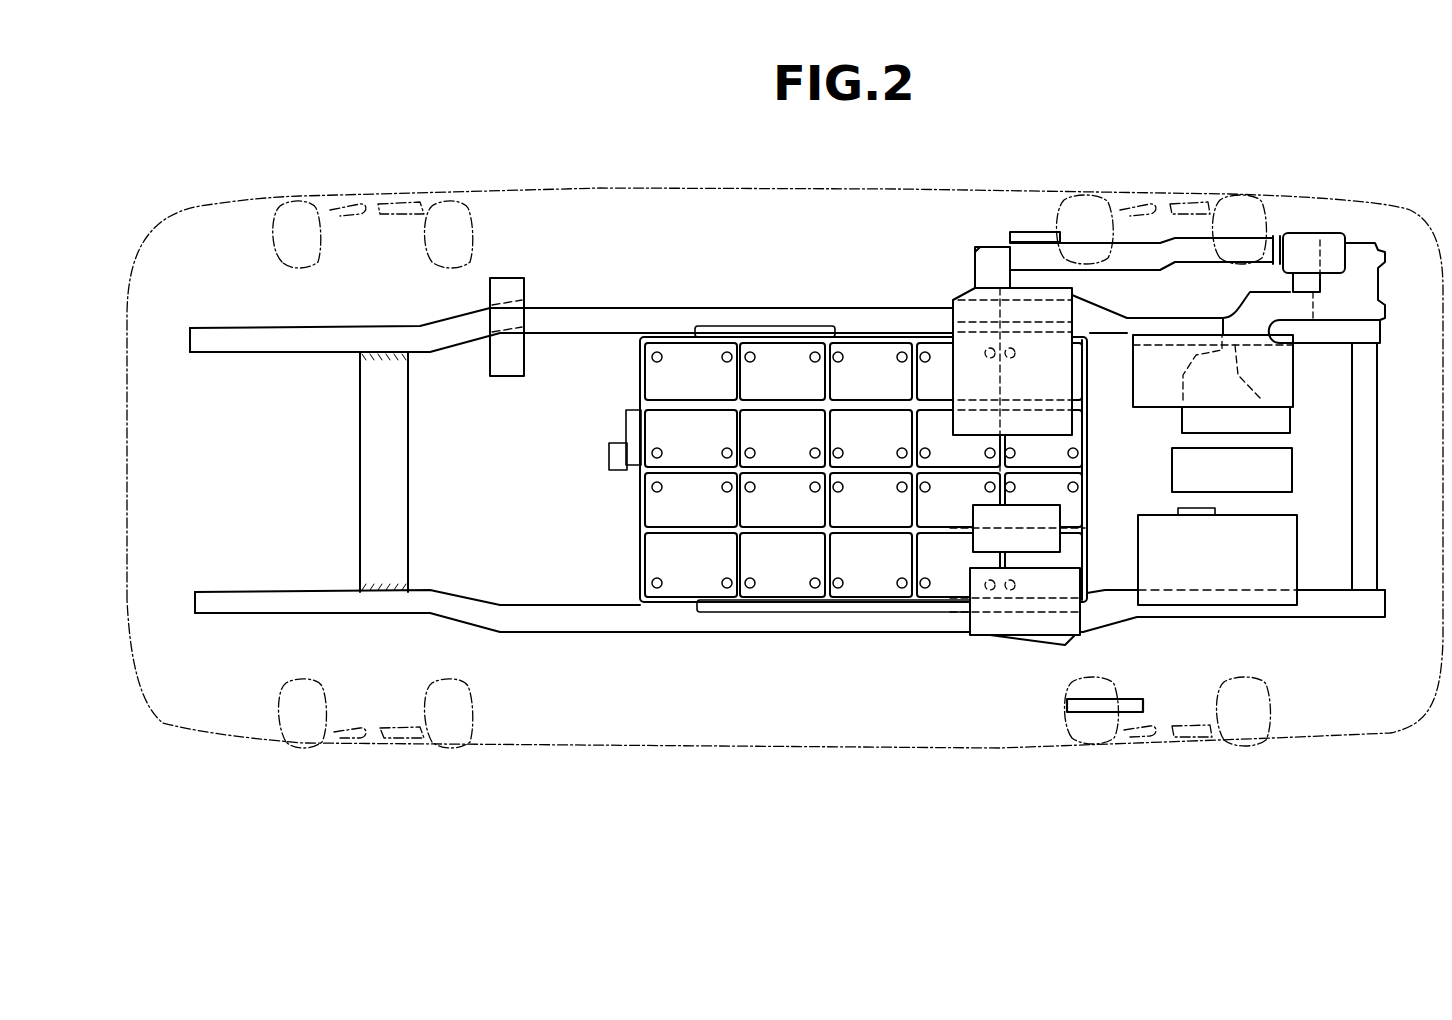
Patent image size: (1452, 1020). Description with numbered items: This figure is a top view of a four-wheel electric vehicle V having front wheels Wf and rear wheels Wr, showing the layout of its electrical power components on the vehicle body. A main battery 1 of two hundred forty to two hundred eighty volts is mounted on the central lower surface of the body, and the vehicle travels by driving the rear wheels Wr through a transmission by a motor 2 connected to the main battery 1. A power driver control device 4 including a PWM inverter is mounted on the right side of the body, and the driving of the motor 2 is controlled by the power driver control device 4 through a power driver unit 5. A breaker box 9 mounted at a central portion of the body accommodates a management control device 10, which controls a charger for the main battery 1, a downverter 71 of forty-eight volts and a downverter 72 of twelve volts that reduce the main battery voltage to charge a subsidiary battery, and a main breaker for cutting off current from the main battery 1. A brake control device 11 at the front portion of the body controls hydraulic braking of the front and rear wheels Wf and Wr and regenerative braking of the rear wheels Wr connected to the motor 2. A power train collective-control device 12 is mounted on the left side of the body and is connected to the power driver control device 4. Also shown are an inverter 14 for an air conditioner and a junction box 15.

The main battery 1 is at (865, 375).
The motor 2 is at (1275, 422).
The power driver control device 4 is at (1028, 234).
The power driver unit 5 is at (962, 315).
The downverter of 48 V 71 is at (1023, 625).
The downverter of 12 V 72 is at (1280, 483).
The breaker box 9 is at (1061, 505).
The management control device 10 is at (1065, 518).
The brake control device 11 is at (518, 290).
The power train collective-control device 12 is at (1135, 705).
The inverter for an air conditioner 14 is at (1163, 365).
The junction box 15 is at (1262, 580).
The electric vehicle V is at (655, 176).
The front wheels Wf is at (292, 215).
The rear wheels Wr is at (1248, 212).